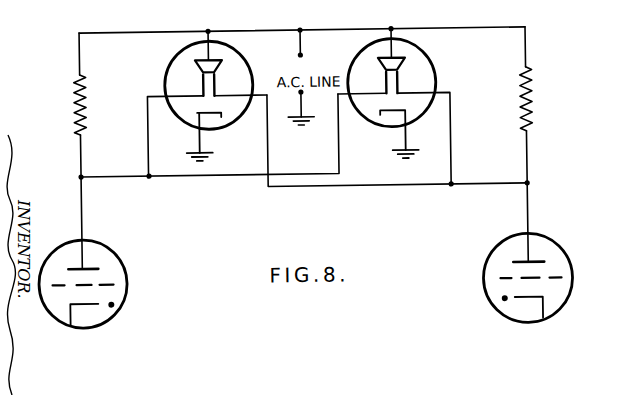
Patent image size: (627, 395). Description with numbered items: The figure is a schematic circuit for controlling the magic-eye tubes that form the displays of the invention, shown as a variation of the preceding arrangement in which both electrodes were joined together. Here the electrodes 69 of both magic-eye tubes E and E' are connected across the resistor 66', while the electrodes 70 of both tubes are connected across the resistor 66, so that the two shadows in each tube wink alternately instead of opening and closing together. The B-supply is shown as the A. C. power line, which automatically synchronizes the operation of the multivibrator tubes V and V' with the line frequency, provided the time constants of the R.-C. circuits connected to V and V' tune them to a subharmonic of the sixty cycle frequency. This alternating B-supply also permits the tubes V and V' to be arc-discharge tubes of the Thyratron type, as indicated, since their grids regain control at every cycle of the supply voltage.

The resistor 66 is at (101, 104).
The resistor 66' is at (550, 98).
The electrode 69 is at (216, 79).
The electrode 70 is at (202, 78).
The magic-eye tube E is at (213, 136).
The magic-eye tube E' is at (408, 134).
The multivibrator tube V is at (97, 284).
The multivibrator tube V' is at (516, 278).